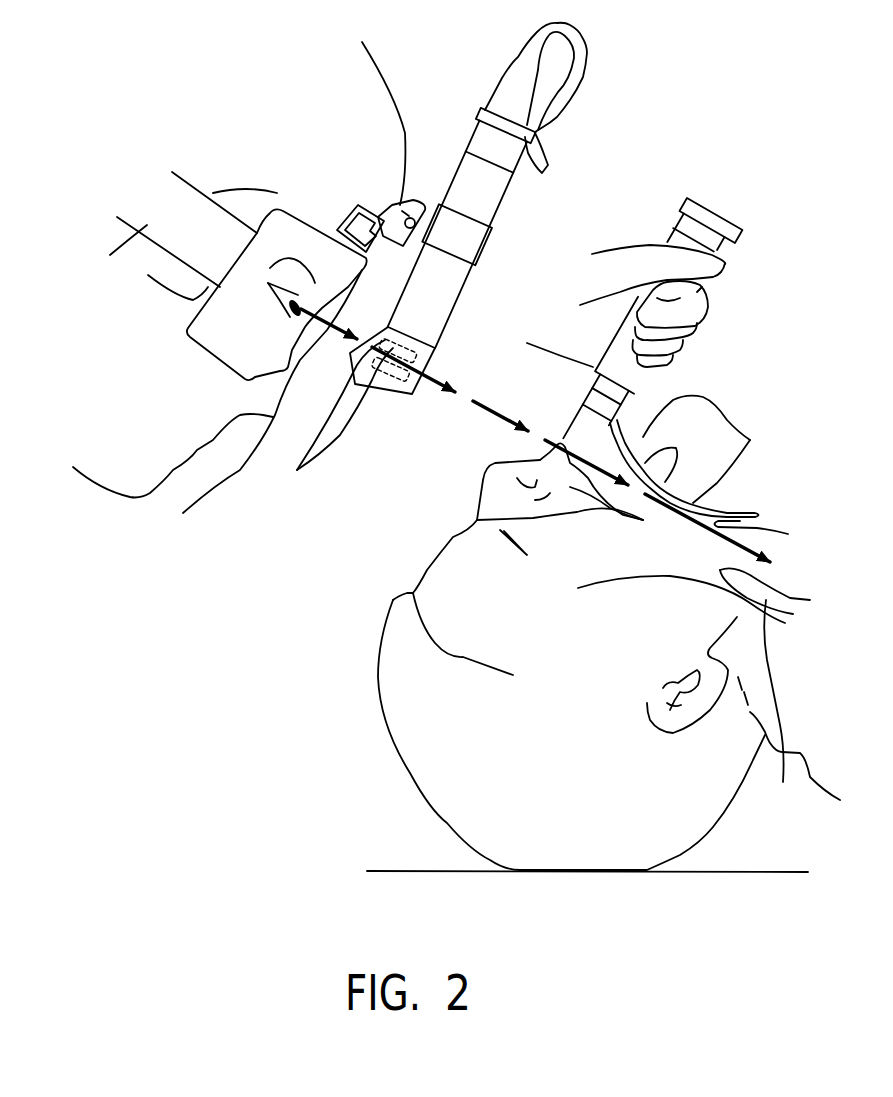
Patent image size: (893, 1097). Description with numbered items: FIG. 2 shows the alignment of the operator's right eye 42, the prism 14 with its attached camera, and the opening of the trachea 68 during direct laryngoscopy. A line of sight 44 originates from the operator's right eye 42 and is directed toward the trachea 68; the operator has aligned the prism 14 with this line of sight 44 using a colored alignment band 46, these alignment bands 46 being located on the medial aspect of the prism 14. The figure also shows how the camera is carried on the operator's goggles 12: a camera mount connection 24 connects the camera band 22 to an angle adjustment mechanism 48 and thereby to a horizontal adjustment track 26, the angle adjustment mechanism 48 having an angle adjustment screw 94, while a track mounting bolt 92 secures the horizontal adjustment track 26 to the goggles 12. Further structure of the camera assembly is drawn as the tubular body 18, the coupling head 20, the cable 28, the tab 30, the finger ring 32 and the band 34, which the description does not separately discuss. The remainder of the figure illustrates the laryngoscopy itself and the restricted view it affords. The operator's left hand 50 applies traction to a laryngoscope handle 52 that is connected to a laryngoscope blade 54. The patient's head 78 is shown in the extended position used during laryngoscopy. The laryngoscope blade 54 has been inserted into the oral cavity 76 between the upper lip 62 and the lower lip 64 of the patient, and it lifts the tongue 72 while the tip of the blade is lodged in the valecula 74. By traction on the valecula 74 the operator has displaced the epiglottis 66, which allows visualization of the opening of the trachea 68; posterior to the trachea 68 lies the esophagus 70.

The goggles 12 is at (203, 307).
The prism 14 is at (185, 511).
The tubular body 18 is at (437, 300).
The coupling head 20 is at (437, 337).
The camera band 22 is at (463, 243).
The camera mount connection 24 is at (424, 211).
The horizontal adjustment track 26 is at (340, 230).
The cable 28 is at (183, 220).
The tab 30 is at (520, 107).
The finger ring 32 is at (563, 82).
The band 34 is at (538, 136).
The operator's right eye 42 is at (282, 293).
The line of sight 44 is at (510, 437).
The colored alignment band 46 is at (297, 470).
The angle adjustment mechanism 48 is at (406, 212).
The operator's left hand 50 is at (725, 263).
The laryngoscope handle 52 is at (713, 222).
The laryngoscope blade 54 is at (690, 470).
The upper lip 62 is at (540, 460).
The lower lip 64 is at (690, 467).
The epiglottis 66 is at (760, 478).
The trachea 68 is at (777, 553).
The esophagus 70 is at (783, 782).
The tongue 72 is at (750, 440).
The valecula 74 is at (762, 514).
The oral cavity 76 is at (477, 520).
The patient's head 78 is at (470, 763).
The track mounting bolt 92 is at (337, 233).
The angle adjustment screw 94 is at (414, 218).